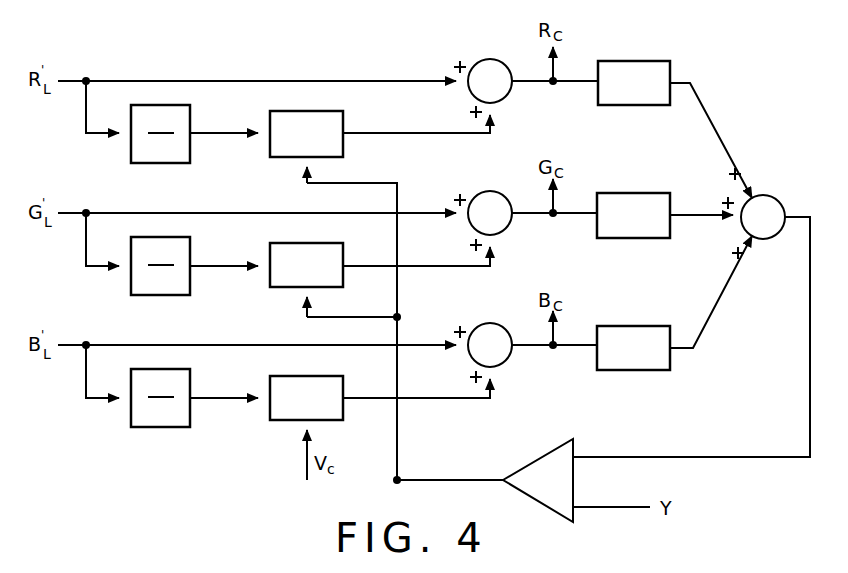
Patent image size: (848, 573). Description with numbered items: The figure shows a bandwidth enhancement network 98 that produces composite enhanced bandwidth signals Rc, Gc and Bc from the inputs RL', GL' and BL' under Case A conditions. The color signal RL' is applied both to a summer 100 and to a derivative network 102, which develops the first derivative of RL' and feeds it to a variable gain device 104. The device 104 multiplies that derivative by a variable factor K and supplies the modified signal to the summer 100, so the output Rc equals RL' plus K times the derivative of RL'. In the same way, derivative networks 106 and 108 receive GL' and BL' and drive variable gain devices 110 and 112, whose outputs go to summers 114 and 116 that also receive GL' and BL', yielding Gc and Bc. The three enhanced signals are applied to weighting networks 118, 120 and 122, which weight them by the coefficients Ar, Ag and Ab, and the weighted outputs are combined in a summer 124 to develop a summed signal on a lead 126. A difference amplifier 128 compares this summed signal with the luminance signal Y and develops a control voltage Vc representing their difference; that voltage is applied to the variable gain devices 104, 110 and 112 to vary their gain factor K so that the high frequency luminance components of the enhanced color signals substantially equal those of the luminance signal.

The bandwidth enhancement network 98 is at (358, 72).
The summer 100 is at (505, 97).
The derivative network 102 is at (190, 116).
The variable gain device 104 is at (326, 157).
The derivative network 106 is at (190, 284).
The derivative network 108 is at (190, 385).
The variable gain device 110 is at (326, 287).
The variable gain device 112 is at (318, 420).
The summer 114 is at (505, 229).
The summer 116 is at (505, 361).
The weighting network 118 is at (640, 105).
The weighting network 120 is at (637, 238).
The weighting network 122 is at (647, 370).
The summer 124 is at (772, 195).
The lead 126 is at (810, 352).
The difference amplifier 128 is at (573, 480).